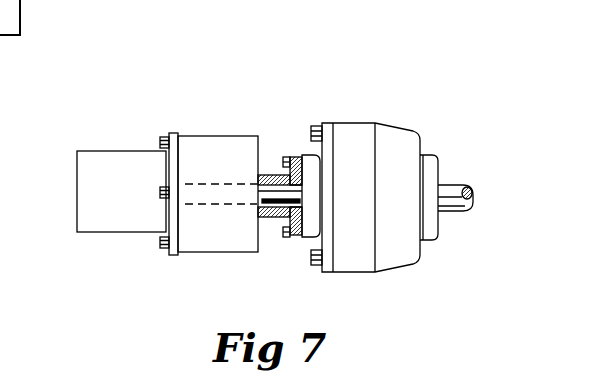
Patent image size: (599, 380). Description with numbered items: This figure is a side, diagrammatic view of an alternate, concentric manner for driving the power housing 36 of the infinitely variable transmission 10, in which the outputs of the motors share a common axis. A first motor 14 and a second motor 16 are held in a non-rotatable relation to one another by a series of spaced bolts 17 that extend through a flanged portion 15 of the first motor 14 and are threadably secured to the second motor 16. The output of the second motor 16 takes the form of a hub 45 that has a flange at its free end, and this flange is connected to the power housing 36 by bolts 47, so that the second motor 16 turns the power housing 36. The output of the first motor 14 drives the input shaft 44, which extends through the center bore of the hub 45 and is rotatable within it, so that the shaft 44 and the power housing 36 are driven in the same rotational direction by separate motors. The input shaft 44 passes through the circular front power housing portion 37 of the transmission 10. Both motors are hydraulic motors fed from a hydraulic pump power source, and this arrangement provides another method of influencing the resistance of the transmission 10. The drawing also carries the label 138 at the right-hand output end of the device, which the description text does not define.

The infinitely variable transmission 10 is at (386, 92).
The first motor 14 is at (77, 186).
The flanged portion 15 is at (173, 133).
The second motor 16 is at (218, 255).
The bolts 17 is at (160, 142).
The power housing 36 is at (380, 123).
The front power housing portion 37 is at (326, 272).
The input shaft 44 is at (278, 217).
The hub 45 is at (276, 175).
The bolts 47 is at (288, 157).
The output shaft 138 is at (458, 183).